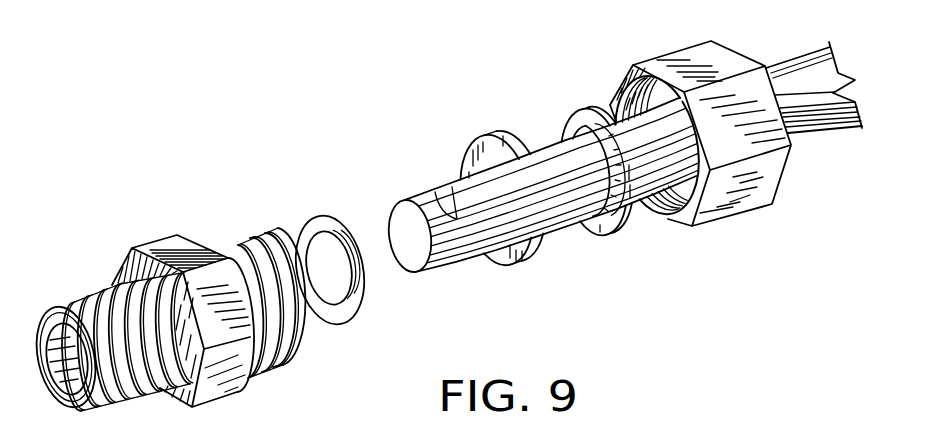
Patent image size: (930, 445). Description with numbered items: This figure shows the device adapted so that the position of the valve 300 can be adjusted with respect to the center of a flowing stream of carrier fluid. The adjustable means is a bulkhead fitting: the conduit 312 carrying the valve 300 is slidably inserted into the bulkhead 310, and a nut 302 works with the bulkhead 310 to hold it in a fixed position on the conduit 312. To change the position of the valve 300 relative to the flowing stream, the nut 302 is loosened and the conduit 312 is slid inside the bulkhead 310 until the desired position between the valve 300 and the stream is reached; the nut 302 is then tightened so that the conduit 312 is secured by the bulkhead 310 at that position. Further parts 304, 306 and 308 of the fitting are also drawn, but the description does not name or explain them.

The valve 300 is at (311, 127).
The nut 302 is at (770, 173).
The washer 304 is at (623, 220).
The flange 306 is at (472, 158).
The sealing ring 308 is at (318, 220).
The bulkhead 310 is at (175, 250).
The conduit 312 is at (563, 162).